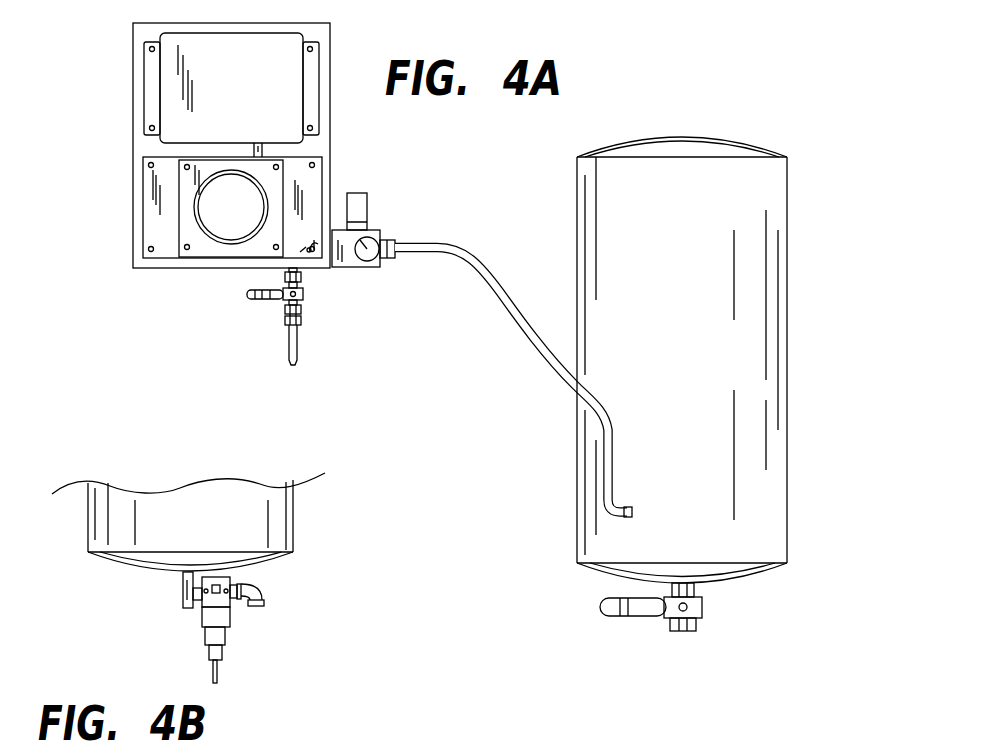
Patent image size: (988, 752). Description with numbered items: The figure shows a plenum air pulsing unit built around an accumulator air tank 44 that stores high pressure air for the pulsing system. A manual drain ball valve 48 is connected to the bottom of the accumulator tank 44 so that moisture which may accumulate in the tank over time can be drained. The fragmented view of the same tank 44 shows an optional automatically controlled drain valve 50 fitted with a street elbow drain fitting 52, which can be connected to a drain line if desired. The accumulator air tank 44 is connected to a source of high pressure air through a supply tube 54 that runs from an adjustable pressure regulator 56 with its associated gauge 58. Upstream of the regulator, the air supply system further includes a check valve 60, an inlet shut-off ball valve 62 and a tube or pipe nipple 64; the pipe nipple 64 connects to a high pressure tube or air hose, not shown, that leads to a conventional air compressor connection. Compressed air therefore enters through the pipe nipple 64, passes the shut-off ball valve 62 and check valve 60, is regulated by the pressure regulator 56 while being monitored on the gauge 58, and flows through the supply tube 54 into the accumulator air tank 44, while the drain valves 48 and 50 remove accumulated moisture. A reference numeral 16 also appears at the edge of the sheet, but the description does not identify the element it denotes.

In FIG. 4A, the housing 16 is at (668, 751).
In FIG. 4A, the accumulator air tank 44 is at (728, 338).
In FIG. 4B, the accumulator air tank 44 is at (206, 528).
In FIG. 4A, the manual drain ball valve 48 is at (702, 607).
In FIG. 4B, the automatically controlled drain valve 50 is at (237, 623).
In FIG. 4B, the street elbow drain fitting 52 is at (256, 588).
In FIG. 4A, the supply tube 54 is at (533, 345).
In FIG. 4A, the adjustable pressure regulator 56 is at (358, 193).
In FIG. 4A, the gauge 58 is at (376, 237).
In FIG. 4A, the check valve 60 is at (301, 275).
In FIG. 4A, the inlet shut-off ball valve 62 is at (243, 298).
In FIG. 4A, the pipe nipple 64 is at (302, 335).